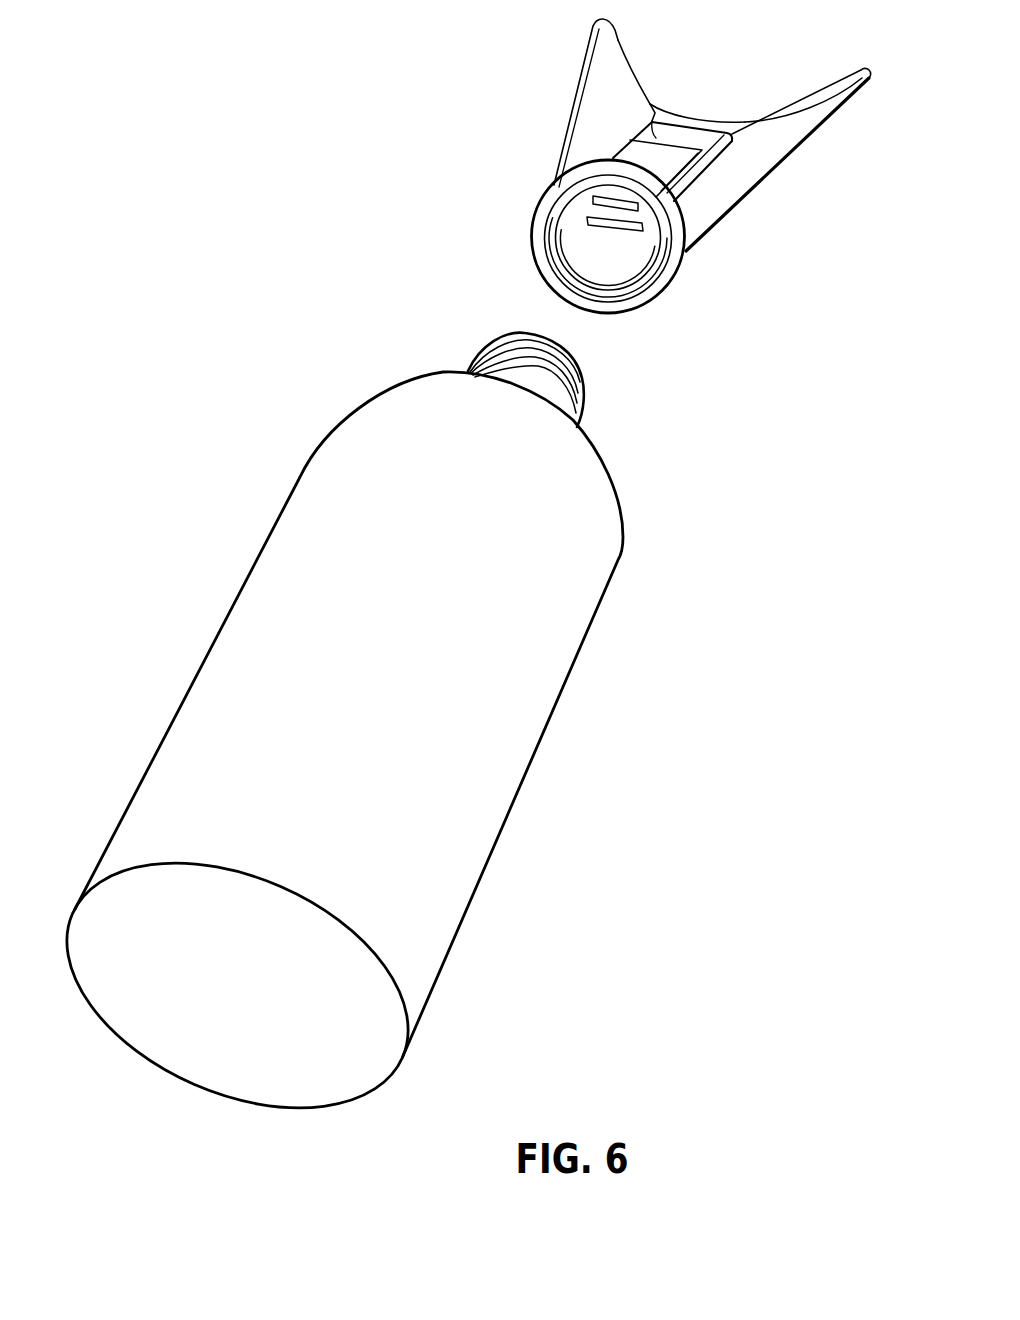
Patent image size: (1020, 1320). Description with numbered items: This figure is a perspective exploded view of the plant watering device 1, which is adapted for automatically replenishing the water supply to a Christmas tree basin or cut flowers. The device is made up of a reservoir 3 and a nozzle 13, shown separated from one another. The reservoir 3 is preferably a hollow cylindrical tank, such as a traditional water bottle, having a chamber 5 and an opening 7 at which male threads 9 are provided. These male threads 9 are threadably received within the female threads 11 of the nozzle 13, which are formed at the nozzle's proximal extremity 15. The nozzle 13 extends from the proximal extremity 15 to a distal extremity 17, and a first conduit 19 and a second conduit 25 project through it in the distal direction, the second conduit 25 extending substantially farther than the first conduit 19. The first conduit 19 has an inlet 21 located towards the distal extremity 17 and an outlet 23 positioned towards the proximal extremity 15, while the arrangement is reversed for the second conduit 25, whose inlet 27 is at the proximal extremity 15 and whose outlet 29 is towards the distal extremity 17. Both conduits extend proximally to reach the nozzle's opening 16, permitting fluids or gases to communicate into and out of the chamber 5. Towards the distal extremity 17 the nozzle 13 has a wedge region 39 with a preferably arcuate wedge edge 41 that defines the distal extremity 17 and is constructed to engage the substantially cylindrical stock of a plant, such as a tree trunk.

The plant watering device 1 is at (725, 671).
The reservoir 3 is at (564, 690).
The chamber 5 is at (445, 798).
The opening 7 is at (557, 337).
The male threads 9 is at (583, 380).
The female threads 11 is at (562, 267).
The nozzle 13 is at (743, 198).
The proximal extremity 15 is at (655, 298).
The opening 16 is at (577, 238).
The distal extremity 17 is at (872, 82).
The first conduit 19 is at (627, 147).
The inlet 21 is at (657, 132).
The outlet 23 is at (585, 197).
The second conduit 25 is at (733, 137).
The inlet 27 is at (603, 220).
The outlet 29 is at (707, 127).
The wedge region 39 is at (645, 98).
The wedge edge 41 is at (617, 24).